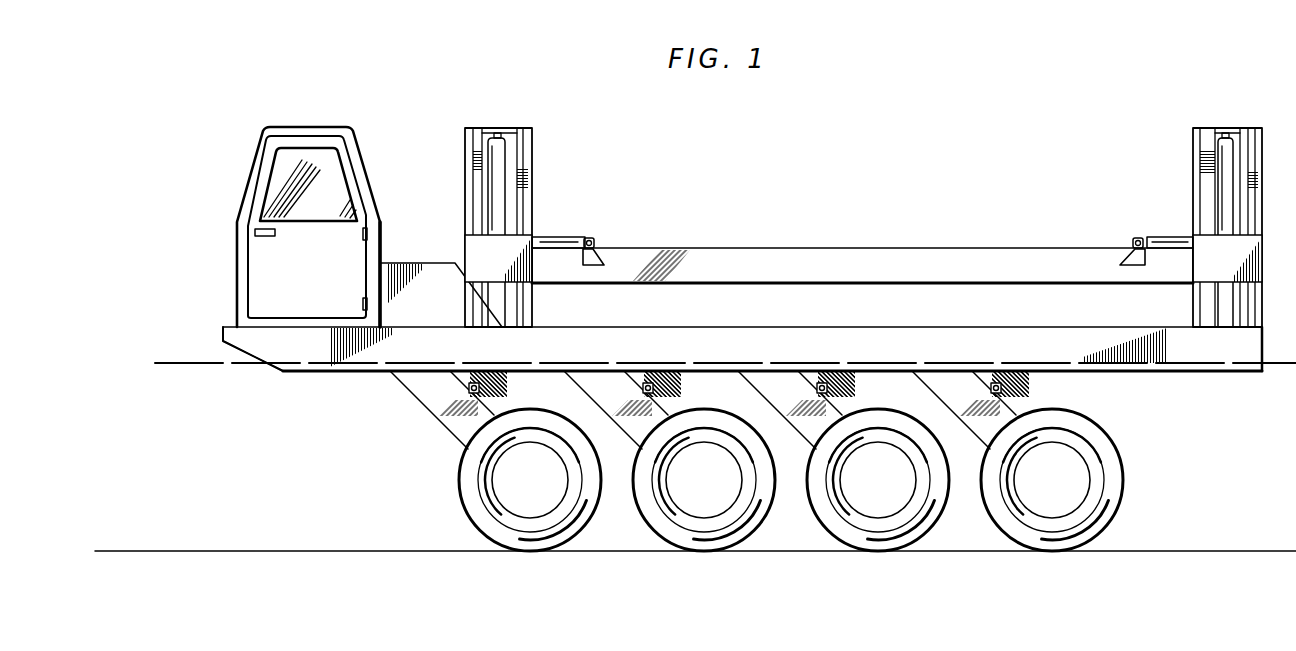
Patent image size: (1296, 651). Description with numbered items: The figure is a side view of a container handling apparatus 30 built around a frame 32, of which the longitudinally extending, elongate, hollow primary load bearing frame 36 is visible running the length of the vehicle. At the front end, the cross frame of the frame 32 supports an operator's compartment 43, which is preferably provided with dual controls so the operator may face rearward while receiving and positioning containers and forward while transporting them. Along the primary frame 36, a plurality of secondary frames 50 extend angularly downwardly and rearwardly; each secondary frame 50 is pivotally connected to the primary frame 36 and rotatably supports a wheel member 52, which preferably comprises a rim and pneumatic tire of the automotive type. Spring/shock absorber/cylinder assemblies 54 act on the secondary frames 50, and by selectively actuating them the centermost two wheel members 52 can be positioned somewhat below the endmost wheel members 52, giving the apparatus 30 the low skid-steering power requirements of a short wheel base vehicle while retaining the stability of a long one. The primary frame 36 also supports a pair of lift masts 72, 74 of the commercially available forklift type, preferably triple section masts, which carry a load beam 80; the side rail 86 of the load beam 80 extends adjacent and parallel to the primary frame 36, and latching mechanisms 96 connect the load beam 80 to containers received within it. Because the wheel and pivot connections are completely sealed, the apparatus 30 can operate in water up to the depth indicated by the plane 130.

The container handling apparatus 30 is at (208, 221).
The frame 32 is at (302, 347).
The primary load bearing frame 36 is at (1024, 356).
The operator's compartment 43 is at (253, 167).
The secondary frame 50 is at (432, 412).
The wheel member 52 is at (577, 522).
The spring/shock absorber/cylinder assembly 54 is at (512, 379).
The lift mast 72 is at (533, 157).
The lift mast 74 is at (1202, 142).
The load beam 80 is at (893, 249).
The side rail 86 is at (770, 257).
The latching mechanism 96 is at (562, 228).
The plane 130 is at (202, 360).